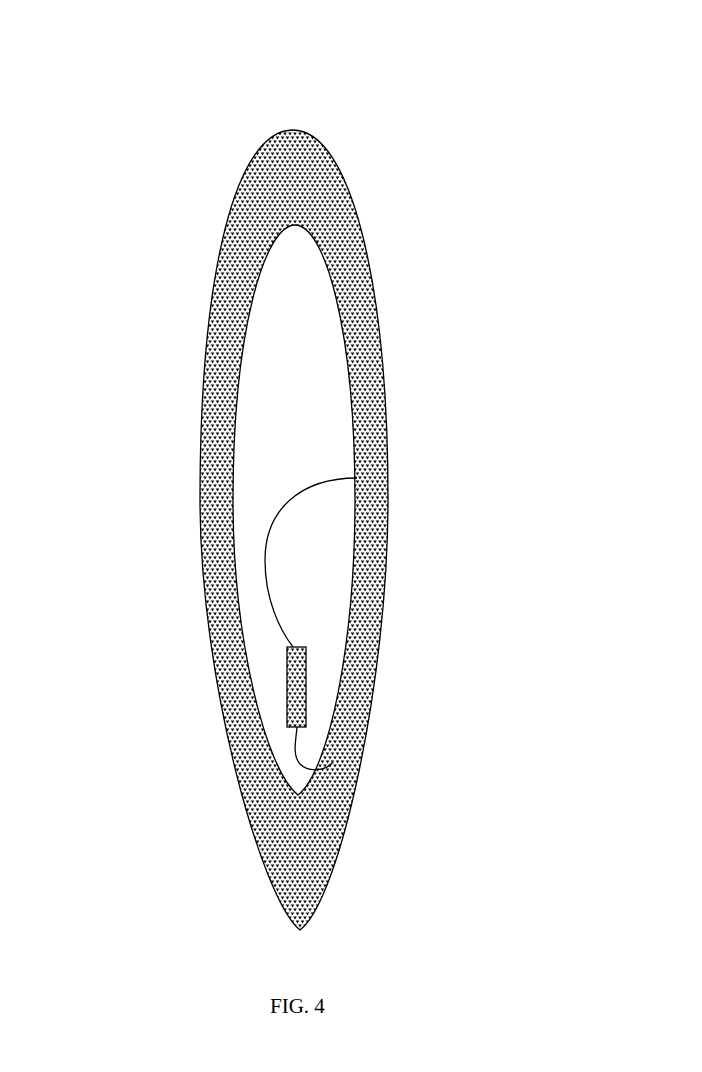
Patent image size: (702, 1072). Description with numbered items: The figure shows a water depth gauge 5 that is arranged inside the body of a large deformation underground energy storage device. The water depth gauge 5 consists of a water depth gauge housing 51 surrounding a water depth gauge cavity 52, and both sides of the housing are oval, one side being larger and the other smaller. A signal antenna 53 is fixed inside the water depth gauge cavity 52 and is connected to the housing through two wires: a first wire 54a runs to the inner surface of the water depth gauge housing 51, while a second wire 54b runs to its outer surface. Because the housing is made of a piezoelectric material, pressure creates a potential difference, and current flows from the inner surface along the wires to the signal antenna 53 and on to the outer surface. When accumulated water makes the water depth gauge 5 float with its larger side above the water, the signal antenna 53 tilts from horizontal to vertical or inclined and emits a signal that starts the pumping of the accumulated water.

The water depth gauge 5 is at (309, 487).
The water depth gauge housing 51 is at (253, 160).
The water depth gauge cavity 52 is at (243, 398).
The signal antenna 53 is at (288, 680).
The first wire 54a is at (295, 502).
The second wire 54b is at (302, 742).